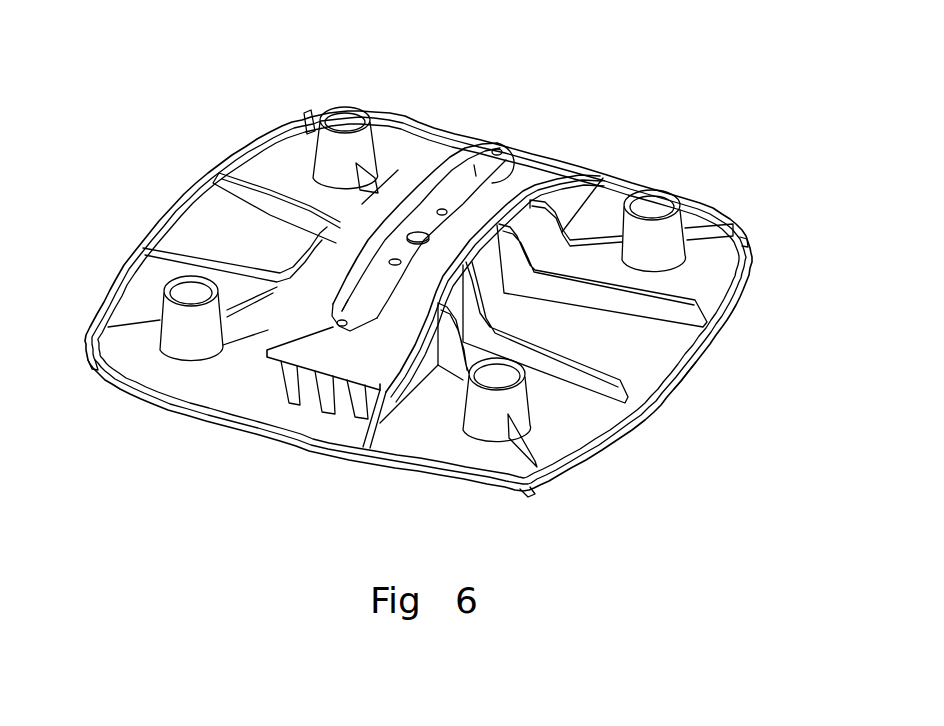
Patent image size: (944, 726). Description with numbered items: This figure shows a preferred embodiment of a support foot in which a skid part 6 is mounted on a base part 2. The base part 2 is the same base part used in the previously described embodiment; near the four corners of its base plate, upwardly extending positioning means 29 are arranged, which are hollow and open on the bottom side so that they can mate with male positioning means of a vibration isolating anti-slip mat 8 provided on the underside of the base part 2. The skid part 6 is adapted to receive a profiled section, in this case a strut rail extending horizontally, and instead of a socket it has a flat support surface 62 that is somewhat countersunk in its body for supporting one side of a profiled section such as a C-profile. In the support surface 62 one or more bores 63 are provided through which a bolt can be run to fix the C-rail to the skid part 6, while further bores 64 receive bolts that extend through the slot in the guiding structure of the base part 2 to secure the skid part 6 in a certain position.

The base part 2 is at (573, 428).
The skid part 6 is at (533, 172).
The anti-slip mat 8 is at (670, 385).
The positioning means 29 is at (343, 125).
The support surface 62 is at (498, 149).
The bores 63 is at (476, 172).
The bores 64 is at (395, 259).